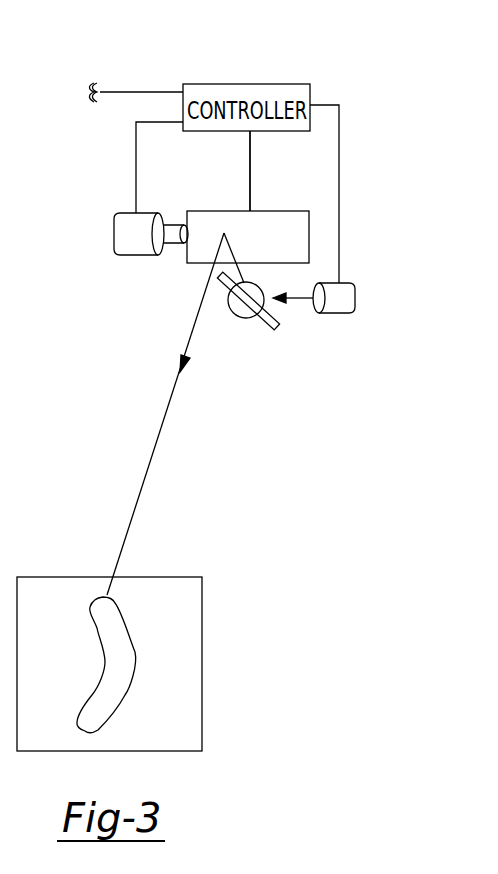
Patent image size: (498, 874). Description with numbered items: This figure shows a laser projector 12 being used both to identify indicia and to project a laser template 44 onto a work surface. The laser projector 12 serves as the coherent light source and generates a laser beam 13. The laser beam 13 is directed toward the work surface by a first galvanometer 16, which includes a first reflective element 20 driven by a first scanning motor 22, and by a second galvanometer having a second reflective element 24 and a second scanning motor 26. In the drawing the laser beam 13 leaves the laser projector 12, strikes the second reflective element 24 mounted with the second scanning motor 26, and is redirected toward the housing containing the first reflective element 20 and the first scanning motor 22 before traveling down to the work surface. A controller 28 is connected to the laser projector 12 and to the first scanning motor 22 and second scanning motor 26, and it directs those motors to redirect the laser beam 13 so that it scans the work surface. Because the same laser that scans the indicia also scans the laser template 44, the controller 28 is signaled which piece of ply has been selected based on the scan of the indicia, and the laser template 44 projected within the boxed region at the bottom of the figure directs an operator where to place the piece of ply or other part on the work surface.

The laser projector 12 is at (335, 298).
The laser beam 13 is at (303, 300).
The first galvanometer 16 is at (216, 200).
The first reflective element 20 is at (295, 247).
The first scanning motor 22 is at (149, 247).
The second reflective element 24 is at (262, 331).
The second scanning motor 26 is at (233, 318).
The controller 28 is at (266, 132).
The laser template 44 is at (123, 617).